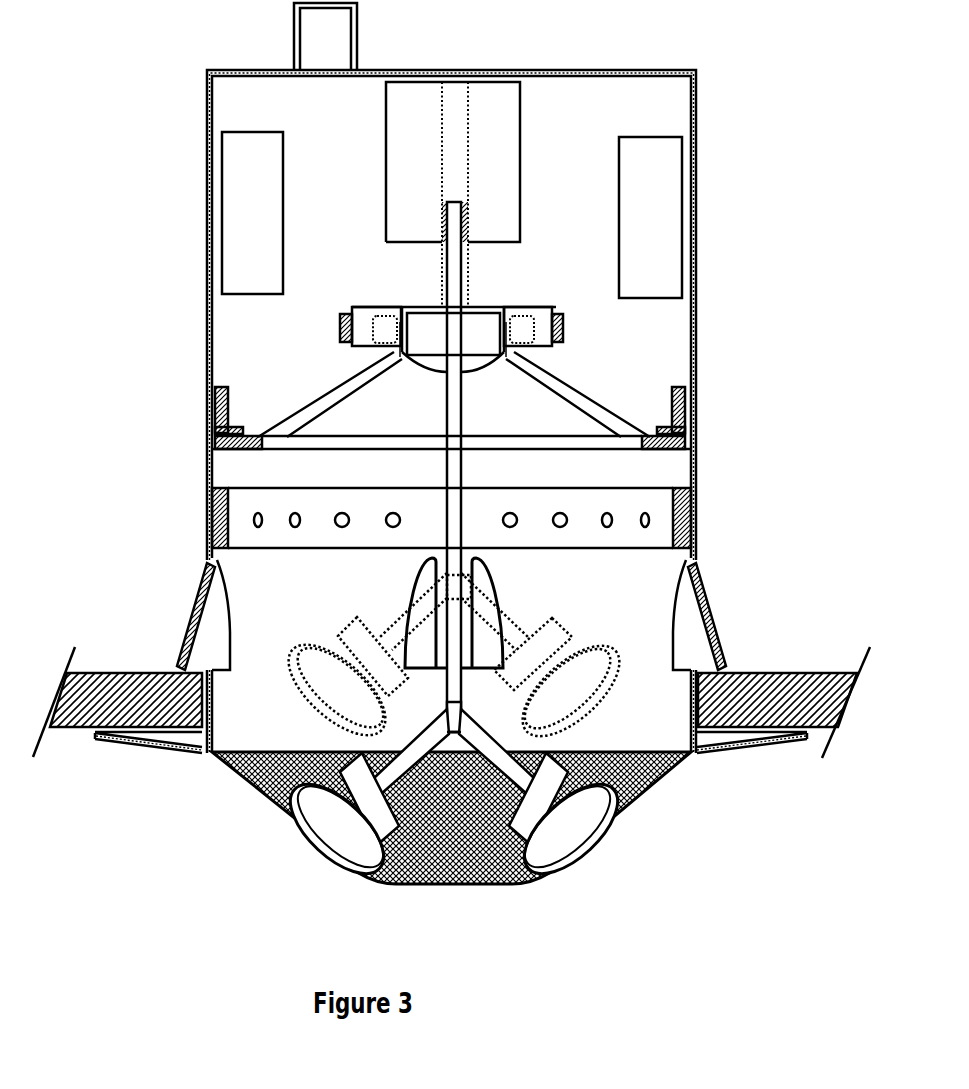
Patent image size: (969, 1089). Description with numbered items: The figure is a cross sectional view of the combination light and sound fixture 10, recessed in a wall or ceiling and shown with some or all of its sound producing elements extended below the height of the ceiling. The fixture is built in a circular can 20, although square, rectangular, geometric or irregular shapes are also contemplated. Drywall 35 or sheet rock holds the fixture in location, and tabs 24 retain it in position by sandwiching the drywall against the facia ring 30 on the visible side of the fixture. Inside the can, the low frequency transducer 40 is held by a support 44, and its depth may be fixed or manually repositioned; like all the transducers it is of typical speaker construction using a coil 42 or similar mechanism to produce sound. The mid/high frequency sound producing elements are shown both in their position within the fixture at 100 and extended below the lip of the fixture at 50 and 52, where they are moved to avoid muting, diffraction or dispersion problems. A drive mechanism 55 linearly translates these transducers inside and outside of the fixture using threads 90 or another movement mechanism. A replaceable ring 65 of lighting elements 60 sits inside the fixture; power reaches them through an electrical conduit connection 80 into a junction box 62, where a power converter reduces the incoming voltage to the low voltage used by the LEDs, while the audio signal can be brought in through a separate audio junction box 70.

The combination light and sound fixture 10 is at (744, 27).
The circular can 20 is at (695, 107).
The tabs 24 is at (707, 612).
The facia ring 30 is at (722, 750).
The drywall 35 is at (140, 673).
The low frequency transducer 40 is at (302, 402).
The coil 42 is at (563, 328).
The support 44 is at (690, 442).
The extended mid/high frequency sound producing element 50 is at (320, 853).
The extended mid/high frequency sound producing element 52 is at (530, 880).
The drive mechanism 55 is at (503, 108).
The lighting elements 60 is at (292, 522).
The junction box 62 is at (682, 222).
The ring 65 is at (212, 497).
The audio junction box 70 is at (222, 192).
The electrical conduit connection 80 is at (293, 48).
The threads 90 is at (447, 268).
The mid/high frequency sound producing elements within the fixture 100 is at (325, 712).